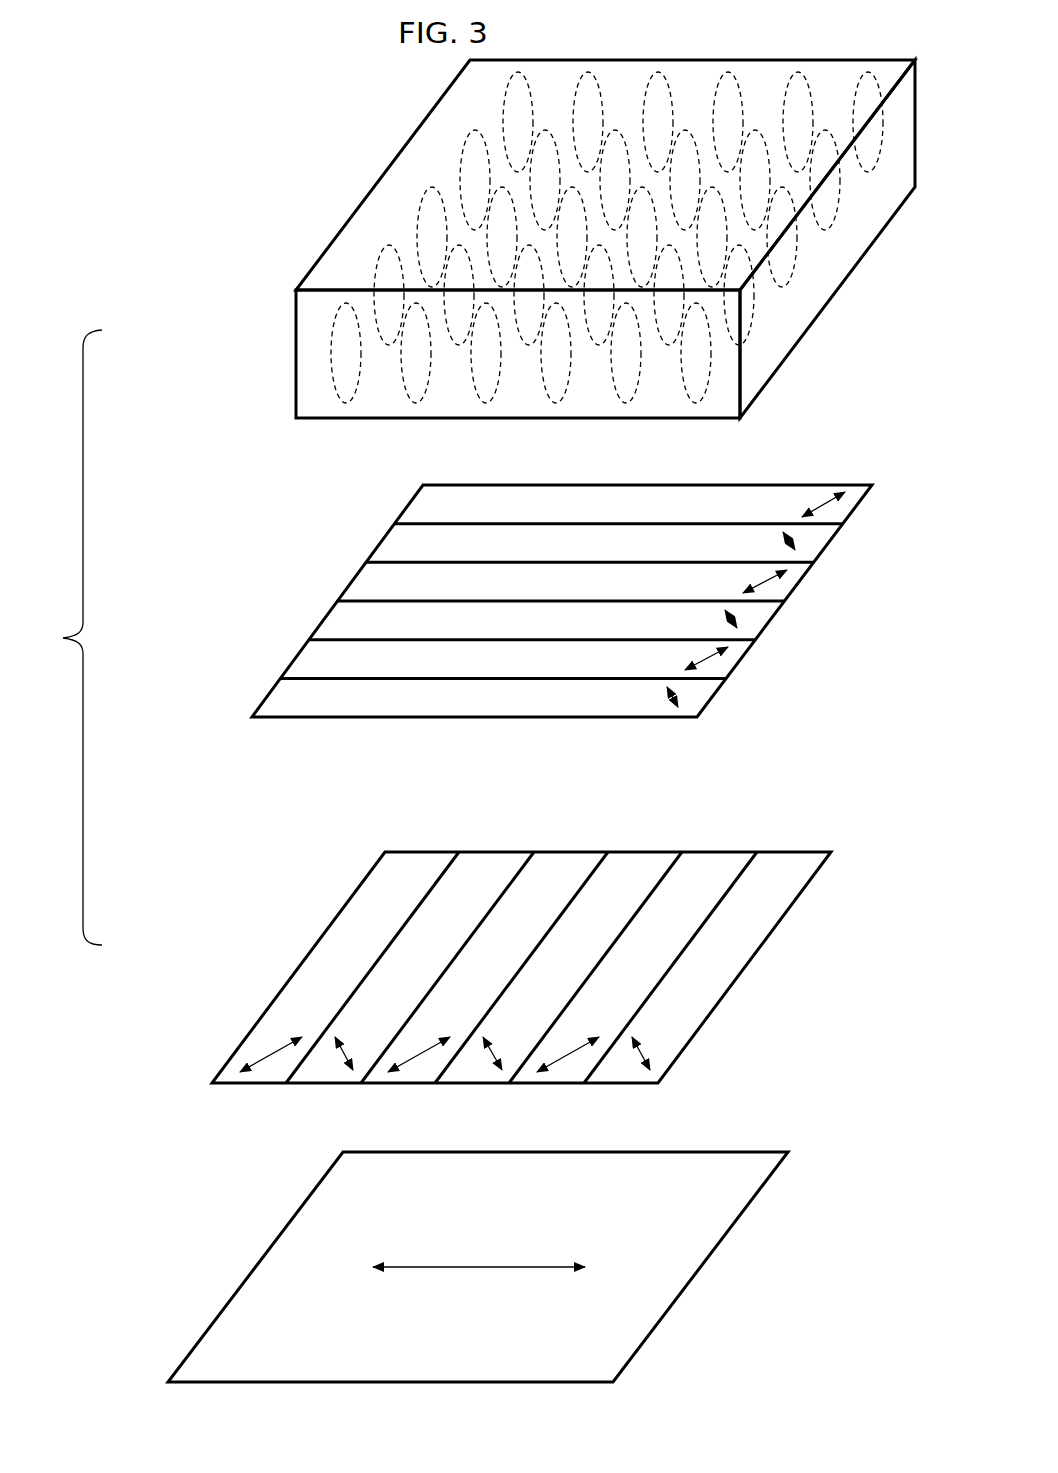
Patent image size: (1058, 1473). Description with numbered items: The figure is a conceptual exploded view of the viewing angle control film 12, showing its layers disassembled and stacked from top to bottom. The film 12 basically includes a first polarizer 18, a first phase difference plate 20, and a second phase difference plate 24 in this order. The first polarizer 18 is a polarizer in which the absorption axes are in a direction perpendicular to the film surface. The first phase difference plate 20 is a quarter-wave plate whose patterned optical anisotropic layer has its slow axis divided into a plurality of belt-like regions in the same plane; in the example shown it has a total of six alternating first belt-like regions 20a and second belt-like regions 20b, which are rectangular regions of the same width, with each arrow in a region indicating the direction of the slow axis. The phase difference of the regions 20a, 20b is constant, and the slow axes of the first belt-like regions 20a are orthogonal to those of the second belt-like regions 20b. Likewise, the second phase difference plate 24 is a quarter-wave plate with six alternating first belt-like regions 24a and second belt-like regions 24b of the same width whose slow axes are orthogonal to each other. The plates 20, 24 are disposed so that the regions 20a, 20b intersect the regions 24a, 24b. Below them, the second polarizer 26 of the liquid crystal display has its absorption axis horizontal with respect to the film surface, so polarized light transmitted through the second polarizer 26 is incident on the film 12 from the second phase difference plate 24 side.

The viewing angle control film 12 is at (67, 637).
The first polarizer 18 is at (297, 354).
The first phase difference plate 20 is at (492, 595).
The first belt-like region 20a is at (402, 541).
The second belt-like region 20b is at (430, 502).
The second phase difference plate 24 is at (474, 937).
The first belt-like region 24a is at (408, 865).
The second belt-like region 24b is at (486, 865).
The second polarizer 26 is at (312, 1255).